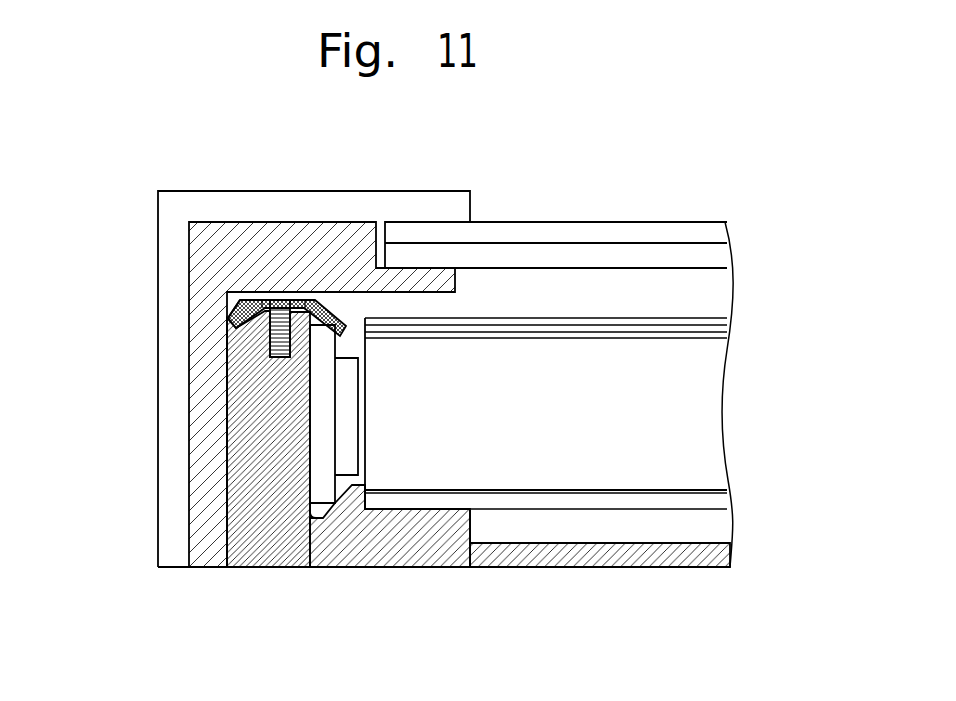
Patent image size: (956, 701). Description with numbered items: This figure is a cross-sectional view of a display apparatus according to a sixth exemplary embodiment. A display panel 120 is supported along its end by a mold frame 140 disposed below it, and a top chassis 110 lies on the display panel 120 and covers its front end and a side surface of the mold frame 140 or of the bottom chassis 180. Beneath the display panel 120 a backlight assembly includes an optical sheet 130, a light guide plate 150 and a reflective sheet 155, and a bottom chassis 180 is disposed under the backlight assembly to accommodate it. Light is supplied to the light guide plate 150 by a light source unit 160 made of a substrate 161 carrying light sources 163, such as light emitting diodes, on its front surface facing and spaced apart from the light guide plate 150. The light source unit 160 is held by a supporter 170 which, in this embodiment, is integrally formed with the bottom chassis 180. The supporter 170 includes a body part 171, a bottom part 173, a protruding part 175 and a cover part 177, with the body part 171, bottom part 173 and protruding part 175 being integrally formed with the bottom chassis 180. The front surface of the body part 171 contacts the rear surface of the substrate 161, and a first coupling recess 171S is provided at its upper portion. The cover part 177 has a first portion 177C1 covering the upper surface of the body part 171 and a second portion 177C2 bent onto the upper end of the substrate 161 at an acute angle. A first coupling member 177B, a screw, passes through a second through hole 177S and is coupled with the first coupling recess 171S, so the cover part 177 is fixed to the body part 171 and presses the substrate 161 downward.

The top chassis 110 is at (168, 523).
The display panel 120 is at (748, 222).
The optical sheet 130 is at (746, 318).
The mold frame 140 is at (205, 241).
The light guide plate 150 is at (716, 407).
The reflective sheet 155 is at (712, 497).
The light source unit 160 is at (305, 497).
The substrate 161 is at (319, 520).
The light sources 163 is at (348, 485).
The supporter 170 is at (401, 471).
The body part 171 is at (240, 430).
The first coupling recess 171S is at (227, 368).
The bottom part 173 is at (428, 535).
The protruding part 175 is at (365, 500).
The cover part 177 is at (249, 249).
The first coupling member 177B is at (262, 350).
The first portion 177C1 is at (262, 298).
The second portion 177C2 is at (306, 298).
The second through hole 177S is at (237, 298).
The bottom chassis 180 is at (561, 567).